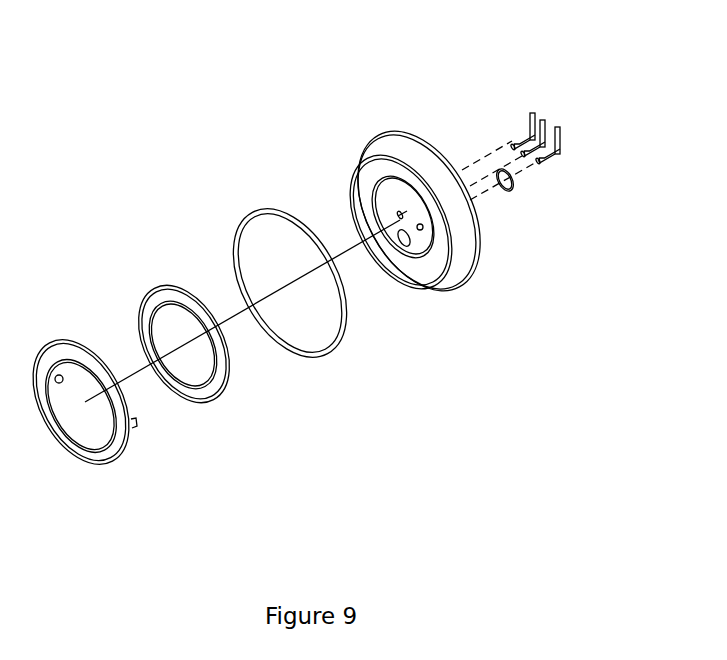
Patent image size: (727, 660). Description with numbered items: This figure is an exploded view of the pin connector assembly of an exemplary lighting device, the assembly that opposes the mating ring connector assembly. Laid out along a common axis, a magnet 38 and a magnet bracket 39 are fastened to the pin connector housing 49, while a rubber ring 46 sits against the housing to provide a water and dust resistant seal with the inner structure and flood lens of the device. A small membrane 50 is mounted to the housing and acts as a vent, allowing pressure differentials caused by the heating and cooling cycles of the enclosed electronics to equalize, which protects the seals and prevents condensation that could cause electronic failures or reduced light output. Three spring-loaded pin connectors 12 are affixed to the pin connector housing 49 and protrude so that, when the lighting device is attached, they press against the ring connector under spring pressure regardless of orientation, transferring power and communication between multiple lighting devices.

The pin connector 12 is at (533, 113).
The magnet 38 is at (200, 387).
The magnet bracket 39 is at (103, 465).
The rubber ring 46 is at (333, 352).
The pin connector housing 49 is at (457, 265).
The membrane 50 is at (513, 192).